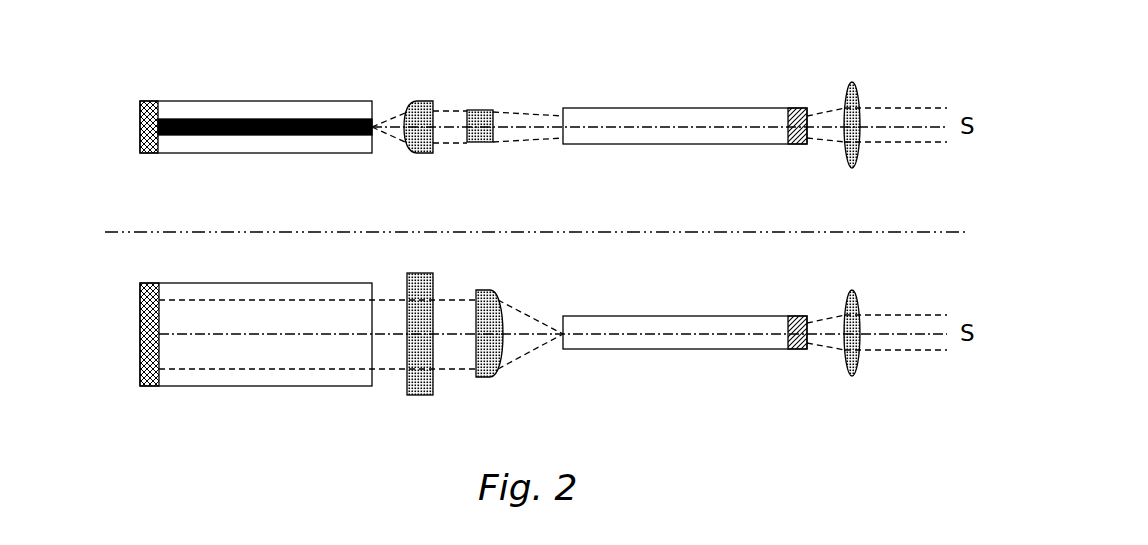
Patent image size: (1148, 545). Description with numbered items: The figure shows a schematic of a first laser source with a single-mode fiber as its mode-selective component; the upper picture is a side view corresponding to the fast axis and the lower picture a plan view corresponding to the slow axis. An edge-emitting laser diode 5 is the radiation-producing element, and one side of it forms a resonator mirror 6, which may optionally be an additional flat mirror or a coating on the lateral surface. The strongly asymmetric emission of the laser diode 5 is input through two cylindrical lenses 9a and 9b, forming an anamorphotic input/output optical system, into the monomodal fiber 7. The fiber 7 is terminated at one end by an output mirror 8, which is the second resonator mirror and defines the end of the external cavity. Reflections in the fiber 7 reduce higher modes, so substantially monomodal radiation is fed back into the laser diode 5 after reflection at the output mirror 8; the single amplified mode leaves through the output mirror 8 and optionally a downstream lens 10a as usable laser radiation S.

The edge-emitting laser diode 5 is at (212, 110).
The resonator mirror 6 is at (155, 100).
The monomodal fiber 7 is at (590, 128).
The output mirror 8 is at (795, 108).
The cylindrical lens 9a is at (420, 105).
The cylindrical lens 9b is at (478, 143).
The downstream lens 10a is at (847, 163).